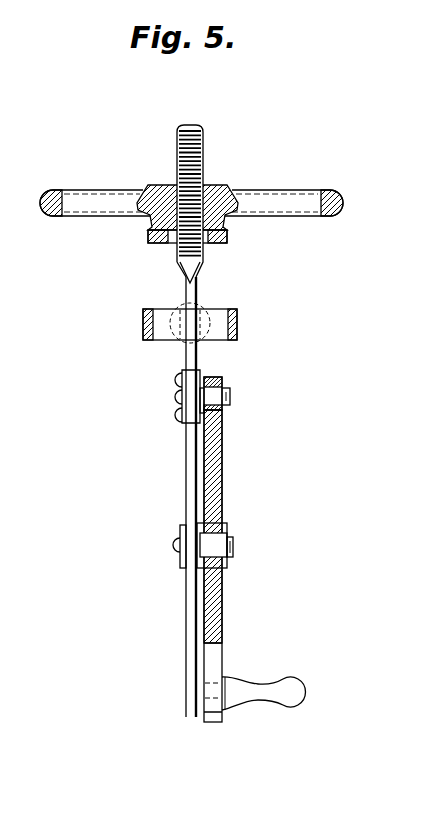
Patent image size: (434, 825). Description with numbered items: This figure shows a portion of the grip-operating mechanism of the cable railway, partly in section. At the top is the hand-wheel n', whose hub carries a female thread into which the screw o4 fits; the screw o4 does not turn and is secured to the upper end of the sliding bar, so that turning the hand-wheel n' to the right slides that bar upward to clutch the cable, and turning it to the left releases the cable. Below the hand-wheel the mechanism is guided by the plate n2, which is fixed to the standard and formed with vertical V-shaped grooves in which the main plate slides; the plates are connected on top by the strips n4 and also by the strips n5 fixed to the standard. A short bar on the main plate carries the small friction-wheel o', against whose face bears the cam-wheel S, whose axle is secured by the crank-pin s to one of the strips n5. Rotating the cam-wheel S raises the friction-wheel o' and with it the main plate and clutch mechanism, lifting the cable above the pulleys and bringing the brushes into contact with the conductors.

The hand-wheel n' is at (191, 198).
The screw o4 is at (204, 166).
The plate n2 is at (186, 467).
The strips n4 is at (143, 331).
The friction-wheel o' is at (230, 387).
The cam-wheel S is at (223, 504).
The crank-pin s is at (233, 547).
The strips n5 is at (178, 541).